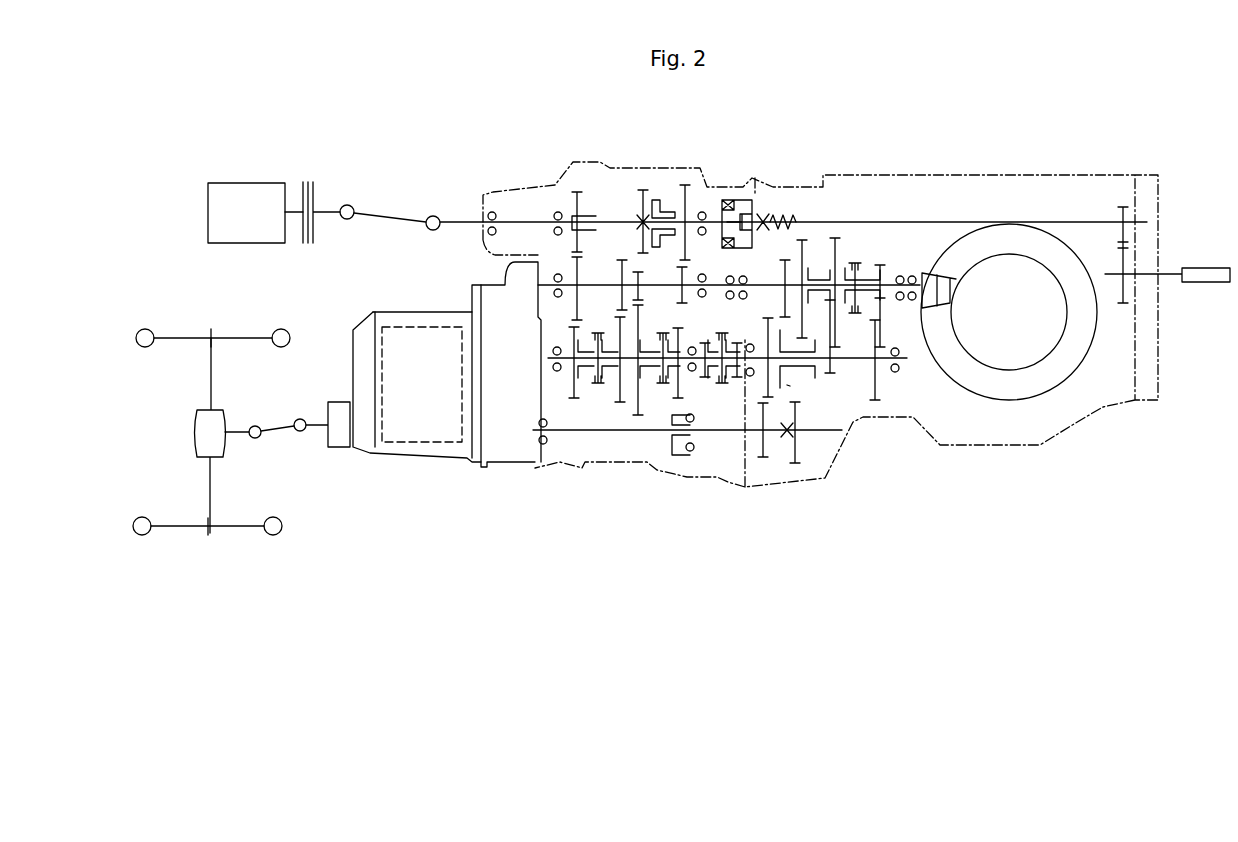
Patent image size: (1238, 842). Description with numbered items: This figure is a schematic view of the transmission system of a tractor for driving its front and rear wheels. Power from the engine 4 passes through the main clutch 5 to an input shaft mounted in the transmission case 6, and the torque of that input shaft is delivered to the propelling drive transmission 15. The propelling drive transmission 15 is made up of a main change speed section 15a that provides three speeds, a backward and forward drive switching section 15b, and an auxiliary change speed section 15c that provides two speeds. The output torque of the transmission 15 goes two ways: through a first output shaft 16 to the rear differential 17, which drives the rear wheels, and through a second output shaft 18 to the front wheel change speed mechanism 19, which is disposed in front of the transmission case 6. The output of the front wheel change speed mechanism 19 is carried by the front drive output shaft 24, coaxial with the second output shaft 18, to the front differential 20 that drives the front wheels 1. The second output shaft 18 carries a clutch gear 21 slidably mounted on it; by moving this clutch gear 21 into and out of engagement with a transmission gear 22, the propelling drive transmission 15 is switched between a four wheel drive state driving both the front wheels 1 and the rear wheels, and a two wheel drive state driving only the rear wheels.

The front wheels 1 is at (277, 331).
The engine 4 is at (246, 182).
The main clutch 5 is at (331, 184).
The transmission case 6 is at (493, 193).
The propelling drive transmission 15 is at (521, 222).
The main change speed section 15a is at (593, 413).
The backward and forward drive switching section 15b is at (719, 413).
The auxiliary change speed section 15c is at (863, 242).
The first output shaft 16 is at (922, 284).
The rear differential 17 is at (961, 401).
The second output shaft 18 is at (610, 434).
The front wheel change speed mechanism 19 is at (407, 443).
The front differential 20 is at (196, 440).
The clutch gear 21 is at (800, 465).
The transmission gear 22 is at (790, 386).
The front drive output shaft 24 is at (318, 421).